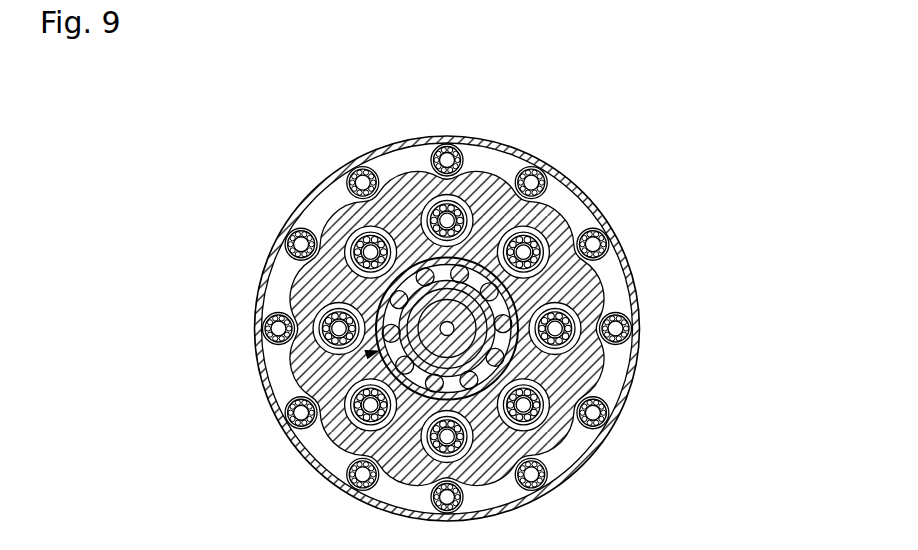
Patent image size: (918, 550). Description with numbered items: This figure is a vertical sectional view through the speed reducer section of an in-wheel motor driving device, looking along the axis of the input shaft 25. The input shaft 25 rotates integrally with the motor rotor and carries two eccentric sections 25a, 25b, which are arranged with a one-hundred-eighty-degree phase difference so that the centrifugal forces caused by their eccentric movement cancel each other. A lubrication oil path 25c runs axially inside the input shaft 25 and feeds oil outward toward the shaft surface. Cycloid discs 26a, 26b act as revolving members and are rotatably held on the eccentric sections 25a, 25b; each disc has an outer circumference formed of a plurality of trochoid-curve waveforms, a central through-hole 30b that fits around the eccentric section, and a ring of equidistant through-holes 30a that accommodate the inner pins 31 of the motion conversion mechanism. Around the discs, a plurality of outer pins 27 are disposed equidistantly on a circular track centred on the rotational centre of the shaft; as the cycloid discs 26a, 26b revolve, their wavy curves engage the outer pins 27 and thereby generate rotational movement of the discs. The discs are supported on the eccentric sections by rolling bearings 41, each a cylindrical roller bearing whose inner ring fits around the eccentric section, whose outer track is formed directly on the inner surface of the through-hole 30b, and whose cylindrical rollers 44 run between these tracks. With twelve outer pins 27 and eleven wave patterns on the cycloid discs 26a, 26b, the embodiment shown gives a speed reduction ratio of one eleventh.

The input shaft 25 is at (544, 328).
The eccentric section 25a is at (441, 329).
The eccentric section 25b is at (364, 329).
The lubrication oil path 25c is at (478, 318).
The cycloid disc 26a is at (364, 329).
The cycloid disc 26b is at (317, 283).
The outer pin 27 is at (291, 252).
The through-hole 30a is at (357, 236).
The through-hole 30b is at (320, 330).
The inner pin 31 is at (446, 219).
The rolling bearing 41 is at (366, 354).
The cylindrical roller 44 is at (357, 432).